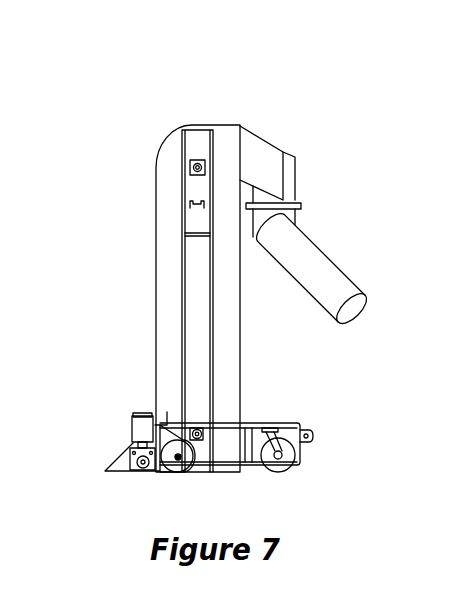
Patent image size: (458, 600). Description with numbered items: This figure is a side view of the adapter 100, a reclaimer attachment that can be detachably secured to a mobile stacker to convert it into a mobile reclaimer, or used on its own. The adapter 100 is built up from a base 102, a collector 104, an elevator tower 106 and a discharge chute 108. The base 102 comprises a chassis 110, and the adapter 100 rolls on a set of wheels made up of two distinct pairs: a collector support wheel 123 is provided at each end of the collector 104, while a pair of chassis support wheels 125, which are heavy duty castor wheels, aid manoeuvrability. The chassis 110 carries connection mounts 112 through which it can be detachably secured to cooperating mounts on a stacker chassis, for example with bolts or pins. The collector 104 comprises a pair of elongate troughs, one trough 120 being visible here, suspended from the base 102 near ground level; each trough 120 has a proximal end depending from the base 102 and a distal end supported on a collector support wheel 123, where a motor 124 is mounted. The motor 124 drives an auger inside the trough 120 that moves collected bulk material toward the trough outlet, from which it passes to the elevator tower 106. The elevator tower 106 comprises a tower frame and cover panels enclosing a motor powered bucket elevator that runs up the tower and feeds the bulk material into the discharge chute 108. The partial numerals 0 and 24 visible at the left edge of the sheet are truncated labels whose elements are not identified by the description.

The partial numeral (cut off) 0 is at (5, 41).
The partial numeral (cut off) 24 is at (11, 334).
The adapter 100 is at (273, 118).
The base 102 is at (255, 470).
The collector 104 is at (100, 478).
The elevator tower 106 is at (143, 241).
The discharge chute 108 is at (333, 283).
The chassis 110 is at (299, 460).
The connection mounts 112 is at (312, 438).
The trough 120 is at (118, 457).
The collector support wheel 123 is at (162, 468).
The motor 124 is at (140, 427).
The chassis support wheels 125 is at (287, 473).